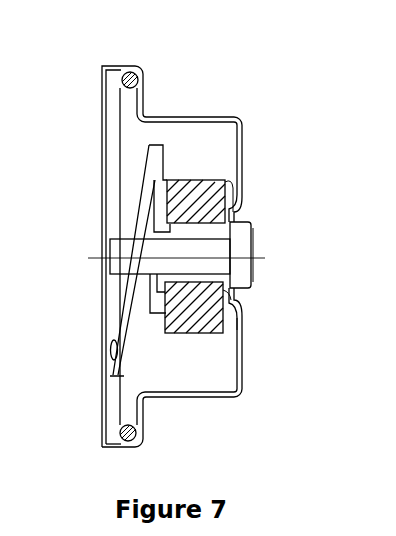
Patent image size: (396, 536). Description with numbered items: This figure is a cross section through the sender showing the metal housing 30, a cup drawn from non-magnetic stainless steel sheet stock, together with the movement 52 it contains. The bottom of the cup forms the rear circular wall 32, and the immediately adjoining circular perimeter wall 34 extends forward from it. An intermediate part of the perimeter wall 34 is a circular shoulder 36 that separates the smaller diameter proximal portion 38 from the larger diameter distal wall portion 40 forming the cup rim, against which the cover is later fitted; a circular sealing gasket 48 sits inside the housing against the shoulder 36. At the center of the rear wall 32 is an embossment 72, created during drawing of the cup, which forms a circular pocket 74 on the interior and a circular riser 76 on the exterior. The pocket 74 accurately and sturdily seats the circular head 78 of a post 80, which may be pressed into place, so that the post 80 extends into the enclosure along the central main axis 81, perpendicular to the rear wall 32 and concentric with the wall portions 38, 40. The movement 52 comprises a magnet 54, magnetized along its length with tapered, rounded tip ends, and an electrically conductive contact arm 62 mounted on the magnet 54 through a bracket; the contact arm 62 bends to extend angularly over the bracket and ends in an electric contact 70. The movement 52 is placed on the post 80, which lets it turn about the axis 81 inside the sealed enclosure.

The housing 30 is at (239, 385).
The rear circular wall 32 is at (243, 342).
The circular perimeter wall 34 is at (181, 399).
The circular shoulder 36 is at (145, 72).
The proximal portion of perimeter wall 38 is at (217, 262).
The distal wall portion 40 is at (116, 65).
The circular sealing gasket 48 is at (128, 378).
The movement 52 is at (242, 170).
The magnet 54 is at (205, 318).
The contact arm 62 is at (121, 314).
The electric contact 70 is at (110, 346).
The embossment 72 is at (252, 297).
The pocket 74 is at (251, 219).
The circular riser 76 is at (254, 241).
The head of post 78 is at (251, 294).
The post 80 is at (186, 253).
The central main axis 81 is at (282, 259).